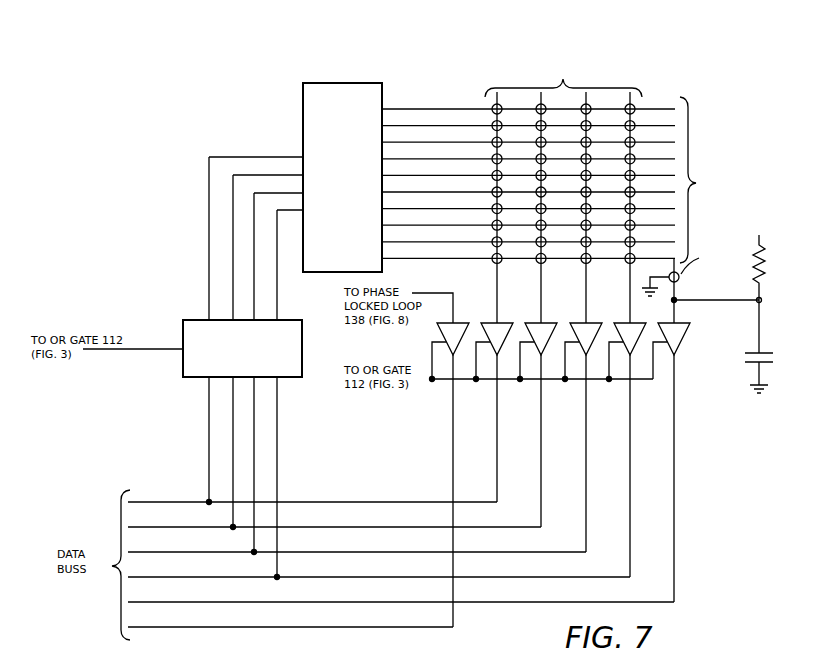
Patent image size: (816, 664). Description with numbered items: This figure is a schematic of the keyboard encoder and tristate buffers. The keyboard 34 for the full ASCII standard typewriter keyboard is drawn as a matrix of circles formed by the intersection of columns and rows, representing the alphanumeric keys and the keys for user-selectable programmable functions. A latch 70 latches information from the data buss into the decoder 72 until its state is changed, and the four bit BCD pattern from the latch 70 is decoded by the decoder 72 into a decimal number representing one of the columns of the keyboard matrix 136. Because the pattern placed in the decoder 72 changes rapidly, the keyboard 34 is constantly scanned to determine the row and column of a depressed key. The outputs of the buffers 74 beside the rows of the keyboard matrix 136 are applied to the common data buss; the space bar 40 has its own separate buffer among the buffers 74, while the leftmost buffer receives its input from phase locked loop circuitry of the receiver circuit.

The keyboard 34 is at (568, 167).
The keyboard matrix 136 is at (652, 102).
The decoder 72 is at (329, 236).
The latch 70 is at (287, 360).
The space bar 40 is at (681, 282).
The buffers 74 is at (418, 341).